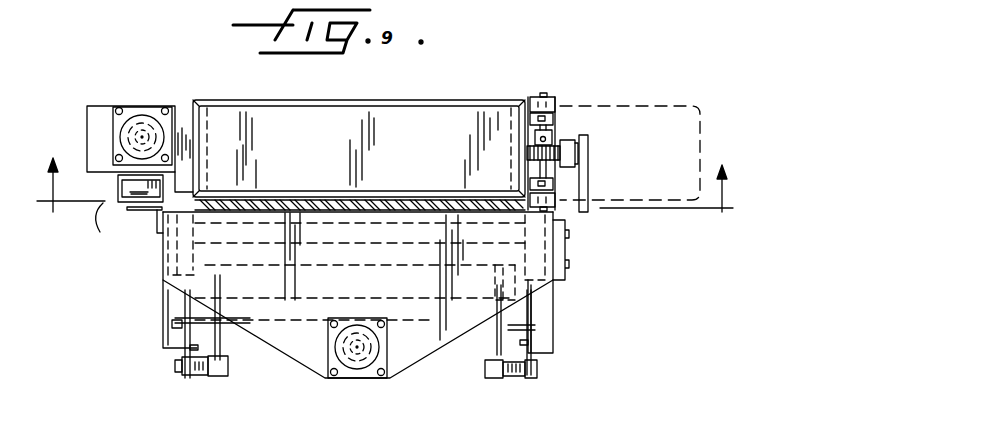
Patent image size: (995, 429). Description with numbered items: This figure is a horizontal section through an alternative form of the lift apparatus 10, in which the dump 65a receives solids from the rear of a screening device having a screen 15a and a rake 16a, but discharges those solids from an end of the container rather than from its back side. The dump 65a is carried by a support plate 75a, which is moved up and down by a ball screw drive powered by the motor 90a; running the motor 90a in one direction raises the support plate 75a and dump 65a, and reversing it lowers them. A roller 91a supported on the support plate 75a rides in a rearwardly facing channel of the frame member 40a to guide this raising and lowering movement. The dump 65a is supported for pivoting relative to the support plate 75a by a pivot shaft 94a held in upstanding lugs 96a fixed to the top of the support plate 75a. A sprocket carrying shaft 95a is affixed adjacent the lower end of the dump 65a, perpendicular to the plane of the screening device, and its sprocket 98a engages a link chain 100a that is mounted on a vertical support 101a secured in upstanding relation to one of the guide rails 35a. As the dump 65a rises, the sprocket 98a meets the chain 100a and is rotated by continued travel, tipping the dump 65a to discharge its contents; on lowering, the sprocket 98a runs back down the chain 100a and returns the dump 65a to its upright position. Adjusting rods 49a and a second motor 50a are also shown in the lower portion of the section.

The lift apparatus 10 is at (381, 205).
The motor 90a is at (130, 108).
The support plate 75a is at (181, 110).
The roller 91a is at (137, 182).
The dump 65a is at (445, 100).
The screen 15a is at (397, 200).
The rake 16a is at (358, 252).
The guide rail 35a is at (163, 294).
The adjusting rod 49a is at (280, 350).
The motor 50a is at (358, 378).
The upstanding lug 96a is at (556, 97).
The sprocket carrying shaft 95a is at (557, 127).
The pivot shaft 94a is at (556, 119).
The sprocket 98a is at (565, 142).
The link chain 100a is at (567, 152).
The vertical support 101a is at (590, 182).
The frame member 40a is at (112, 228).